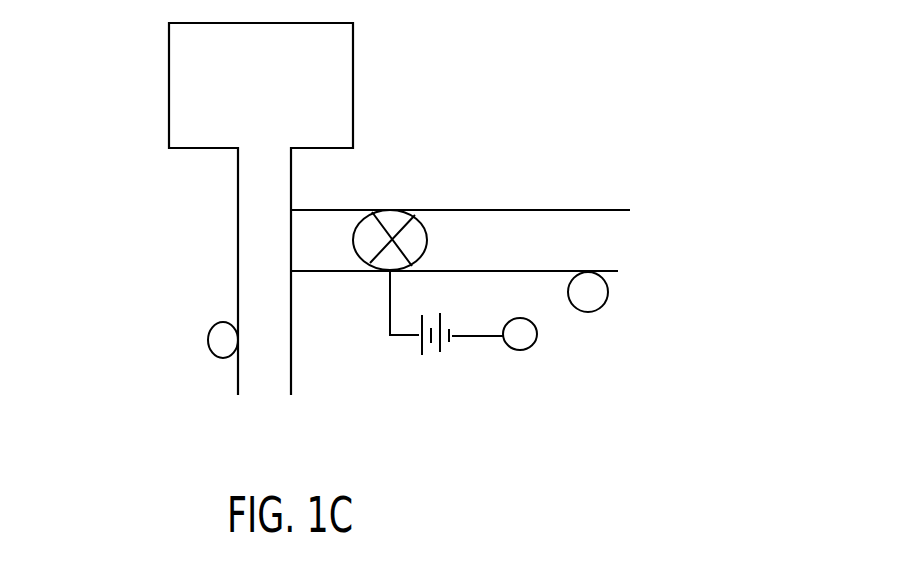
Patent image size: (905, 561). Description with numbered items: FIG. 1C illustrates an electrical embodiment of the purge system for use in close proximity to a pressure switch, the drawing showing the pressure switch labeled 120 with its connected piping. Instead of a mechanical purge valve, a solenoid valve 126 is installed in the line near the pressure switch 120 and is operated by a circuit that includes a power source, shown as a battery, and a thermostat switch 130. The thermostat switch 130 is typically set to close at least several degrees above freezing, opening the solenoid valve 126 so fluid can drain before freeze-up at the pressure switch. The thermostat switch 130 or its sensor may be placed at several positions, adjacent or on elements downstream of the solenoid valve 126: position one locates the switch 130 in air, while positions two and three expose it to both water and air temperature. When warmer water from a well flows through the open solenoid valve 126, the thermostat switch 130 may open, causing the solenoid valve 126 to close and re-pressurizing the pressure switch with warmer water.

The pressure switch 120 is at (372, 92).
The solenoid valve 126 is at (433, 218).
The thermostat switch 130 is at (546, 338).